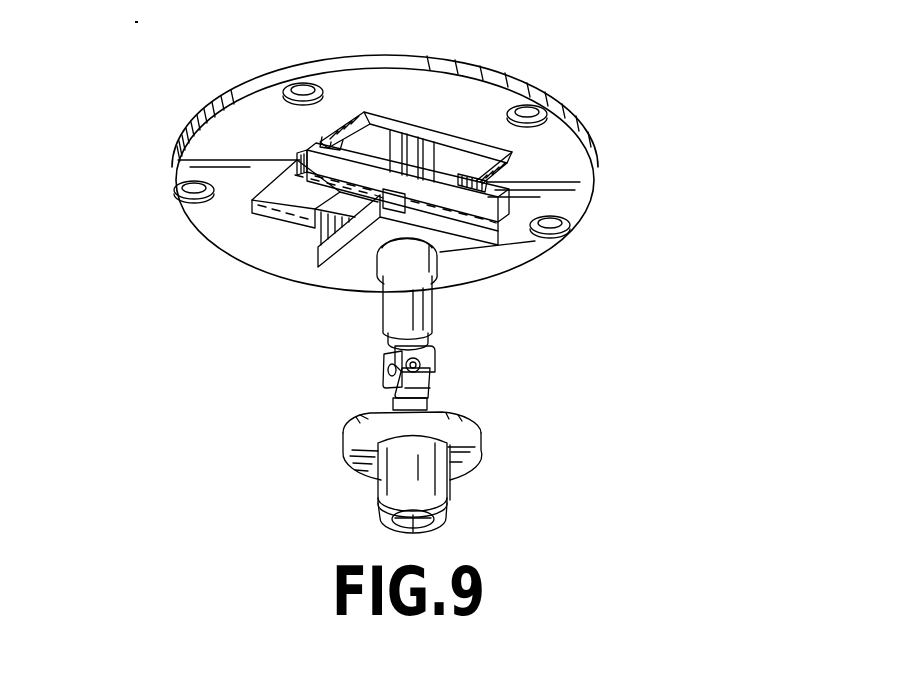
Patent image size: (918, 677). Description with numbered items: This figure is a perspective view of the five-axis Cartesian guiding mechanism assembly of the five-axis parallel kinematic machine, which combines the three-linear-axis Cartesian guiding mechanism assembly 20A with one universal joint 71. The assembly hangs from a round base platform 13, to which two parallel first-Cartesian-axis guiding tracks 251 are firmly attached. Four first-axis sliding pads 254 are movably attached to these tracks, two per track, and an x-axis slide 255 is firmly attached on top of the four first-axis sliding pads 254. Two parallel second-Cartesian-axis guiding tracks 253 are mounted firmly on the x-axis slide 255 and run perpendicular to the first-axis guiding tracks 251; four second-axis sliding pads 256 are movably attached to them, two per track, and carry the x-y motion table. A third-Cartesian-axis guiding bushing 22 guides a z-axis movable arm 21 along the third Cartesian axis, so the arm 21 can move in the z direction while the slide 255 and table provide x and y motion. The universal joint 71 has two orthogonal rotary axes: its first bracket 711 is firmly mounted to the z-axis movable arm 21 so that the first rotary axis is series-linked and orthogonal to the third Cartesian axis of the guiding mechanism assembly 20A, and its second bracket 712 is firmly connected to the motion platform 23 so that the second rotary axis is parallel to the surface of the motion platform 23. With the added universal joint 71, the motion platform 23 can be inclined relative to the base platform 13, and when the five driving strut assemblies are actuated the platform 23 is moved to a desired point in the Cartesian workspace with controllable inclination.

The base platform 13 is at (562, 112).
The three-linear-axis Cartesian guiding mechanism assembly 20A is at (382, 305).
The z-axis movable arm 21 is at (413, 305).
The third-Cartesian-axis guiding bushing 22 is at (433, 300).
The motion platform 23 is at (467, 447).
The universal joint 71 is at (403, 392).
The first bracket 711 is at (366, 358).
The second bracket 712 is at (448, 378).
The first-Cartesian-axis guiding track 251 is at (457, 184).
The second-Cartesian-axis guiding track 253 is at (287, 228).
The first-axis sliding pad 254 is at (472, 183).
The x-axis slide 255 is at (295, 196).
The second-axis sliding pad 256 is at (410, 187).